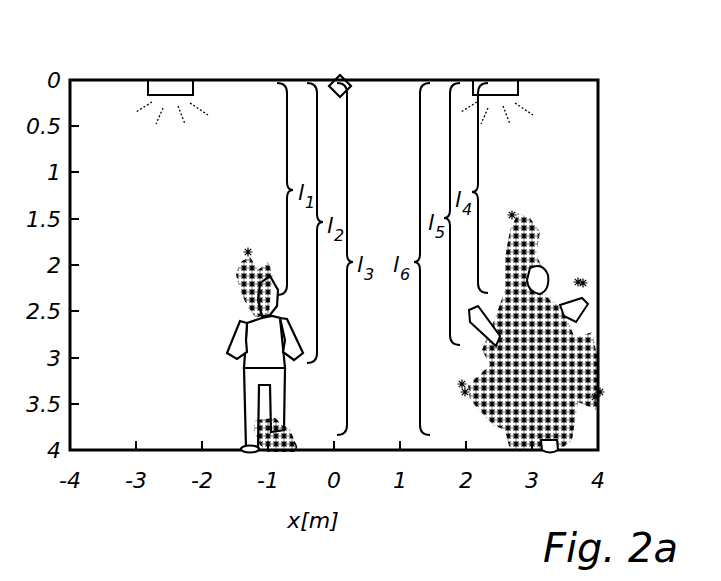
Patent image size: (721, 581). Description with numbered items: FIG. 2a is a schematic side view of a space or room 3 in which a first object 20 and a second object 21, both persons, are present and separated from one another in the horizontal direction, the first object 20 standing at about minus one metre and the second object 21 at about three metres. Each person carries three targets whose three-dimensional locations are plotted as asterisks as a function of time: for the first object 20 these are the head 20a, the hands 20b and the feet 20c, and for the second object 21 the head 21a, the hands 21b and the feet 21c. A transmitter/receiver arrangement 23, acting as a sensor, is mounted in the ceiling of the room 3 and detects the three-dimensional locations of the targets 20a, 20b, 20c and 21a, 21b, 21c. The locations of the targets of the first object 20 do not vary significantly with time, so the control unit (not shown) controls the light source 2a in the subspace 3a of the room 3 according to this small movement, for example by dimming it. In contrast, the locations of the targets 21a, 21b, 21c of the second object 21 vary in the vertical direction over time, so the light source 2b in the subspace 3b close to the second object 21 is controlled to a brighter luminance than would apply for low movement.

The light source 2a is at (169, 87).
The light source 2b is at (494, 87).
The space/room 3 is at (598, 182).
The subspace 3a is at (200, 190).
The subspace 3b is at (563, 155).
The transmitter/receiver arrangement 23 is at (341, 76).
The first object 20 is at (272, 350).
The head of first object 20a is at (240, 290).
The hands of first object 20b is at (293, 375).
The feet of first object 20c is at (292, 431).
The second object 21 is at (584, 332).
The head of second object 21a is at (553, 275).
The hands of second object 21b is at (590, 307).
The feet of second object 21c is at (580, 432).